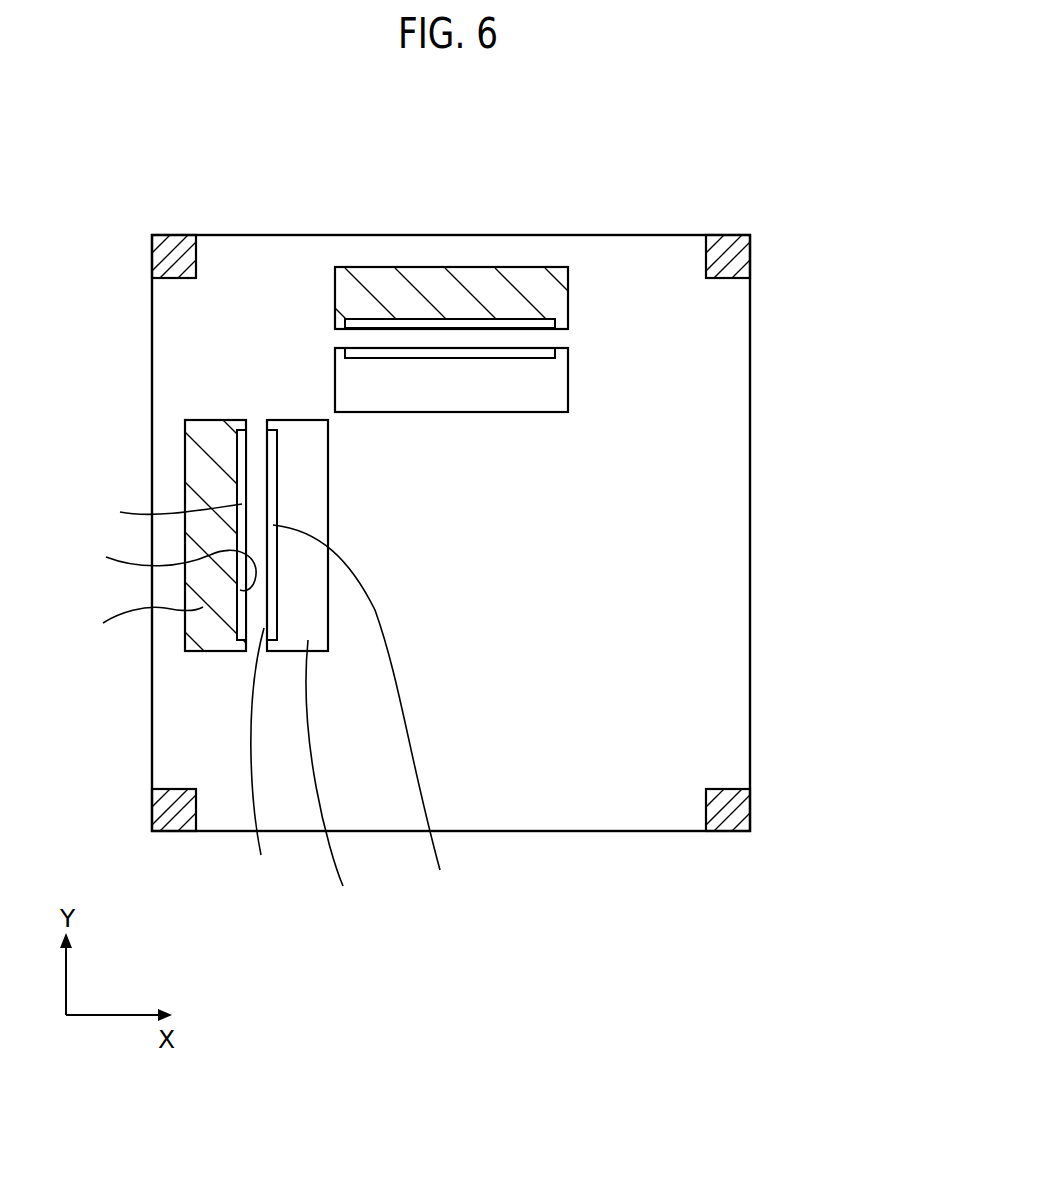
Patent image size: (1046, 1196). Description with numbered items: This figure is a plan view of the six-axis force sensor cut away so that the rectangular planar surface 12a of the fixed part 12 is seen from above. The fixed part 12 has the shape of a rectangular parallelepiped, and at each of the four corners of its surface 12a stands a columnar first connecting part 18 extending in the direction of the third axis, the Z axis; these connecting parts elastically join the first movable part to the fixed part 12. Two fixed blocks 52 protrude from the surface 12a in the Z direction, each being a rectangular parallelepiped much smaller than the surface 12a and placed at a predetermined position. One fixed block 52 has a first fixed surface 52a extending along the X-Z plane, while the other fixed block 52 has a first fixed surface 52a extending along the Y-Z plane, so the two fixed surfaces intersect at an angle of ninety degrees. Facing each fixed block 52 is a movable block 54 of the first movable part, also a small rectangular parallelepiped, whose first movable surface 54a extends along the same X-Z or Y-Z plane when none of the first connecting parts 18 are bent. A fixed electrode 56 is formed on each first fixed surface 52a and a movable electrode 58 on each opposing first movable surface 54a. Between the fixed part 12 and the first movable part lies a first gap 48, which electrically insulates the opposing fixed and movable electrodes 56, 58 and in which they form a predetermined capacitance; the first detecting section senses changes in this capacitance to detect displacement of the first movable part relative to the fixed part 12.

The fixed part 12 is at (550, 848).
The rectangular planar surface 12a is at (700, 665).
The first connecting part 18 is at (728, 850).
The first gap 48 is at (438, 550).
The fixed block 52 is at (518, 400).
The first fixed surface 52a is at (560, 346).
The movable block 54 is at (520, 282).
The first movable surface 54a is at (552, 329).
The fixed electrode 56 is at (458, 360).
The movable electrode 58 is at (460, 322).